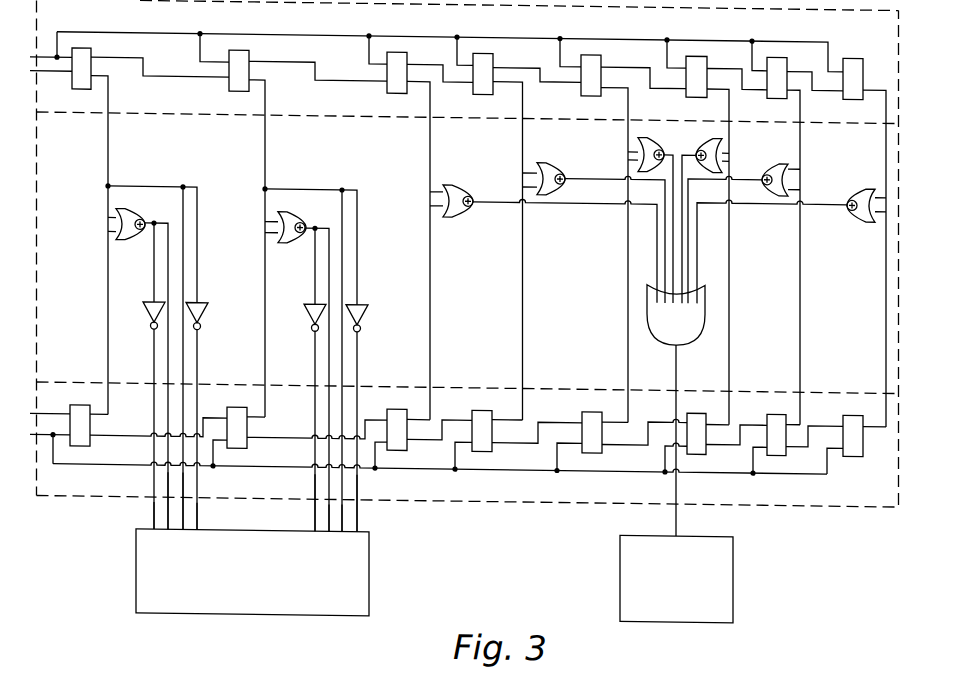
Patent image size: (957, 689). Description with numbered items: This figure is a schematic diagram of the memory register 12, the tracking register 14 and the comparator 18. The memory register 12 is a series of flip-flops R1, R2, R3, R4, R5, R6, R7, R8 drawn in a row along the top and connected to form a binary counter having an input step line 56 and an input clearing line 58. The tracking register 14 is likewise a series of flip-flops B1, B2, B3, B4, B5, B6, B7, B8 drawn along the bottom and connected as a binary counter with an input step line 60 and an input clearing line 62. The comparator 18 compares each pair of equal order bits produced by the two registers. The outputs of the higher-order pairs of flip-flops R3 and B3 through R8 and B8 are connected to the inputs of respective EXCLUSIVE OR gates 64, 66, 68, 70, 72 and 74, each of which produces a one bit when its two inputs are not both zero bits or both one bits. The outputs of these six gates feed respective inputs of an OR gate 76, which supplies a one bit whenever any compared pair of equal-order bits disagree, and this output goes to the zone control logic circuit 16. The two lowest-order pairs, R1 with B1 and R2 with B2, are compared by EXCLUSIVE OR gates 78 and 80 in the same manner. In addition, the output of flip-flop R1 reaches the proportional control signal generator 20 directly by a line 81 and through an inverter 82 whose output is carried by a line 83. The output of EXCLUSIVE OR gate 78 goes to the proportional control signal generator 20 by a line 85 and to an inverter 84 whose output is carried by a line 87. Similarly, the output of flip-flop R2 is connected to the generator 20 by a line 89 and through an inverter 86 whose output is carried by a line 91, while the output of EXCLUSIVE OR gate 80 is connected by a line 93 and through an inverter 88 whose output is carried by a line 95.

The memory register 12 is at (686, 9).
The tracking register 14 is at (873, 478).
The zone control logic circuit 16 is at (733, 577).
The comparator 18 is at (300, 127).
The proportional control signal generator 20 is at (369, 557).
The input step line 56 is at (60, 71).
The input clearing line 58 is at (45, 56).
The input step line 60 is at (50, 387).
The input clearing line 62 is at (53, 437).
The EXCLUSIVE OR gate 64 is at (462, 211).
The EXCLUSIVE OR gate 66 is at (552, 156).
The EXCLUSIVE OR gate 68 is at (652, 131).
The EXCLUSIVE OR gate 70 is at (714, 136).
The EXCLUSIVE OR gate 72 is at (788, 166).
The EXCLUSIVE OR gate 74 is at (858, 210).
The OR gate 76 is at (689, 330).
The EXCLUSIVE OR gate 78 is at (116, 220).
The EXCLUSIVE OR gate 80 is at (278, 222).
The line 81 is at (200, 506).
The inverter 82 is at (208, 302).
The line 83 is at (186, 477).
The inverter 84 is at (147, 300).
The line 85 is at (165, 478).
The inverter 86 is at (368, 300).
The line 87 is at (152, 508).
The inverter 88 is at (312, 303).
The line 89 is at (345, 508).
The line 91 is at (360, 480).
The line 93 is at (313, 481).
The line 95 is at (326, 510).
The memory register flip-flop R1 is at (87, 56).
The memory register flip-flop R2 is at (240, 74).
The memory register flip-flop R3 is at (397, 77).
The memory register flip-flop R4 is at (483, 78).
The memory register flip-flop R5 is at (591, 74).
The memory register flip-flop R6 is at (697, 61).
The memory register flip-flop R7 is at (777, 78).
The memory register flip-flop R8 is at (853, 76).
The tracking register flip-flop B1 is at (80, 426).
The tracking register flip-flop B2 is at (237, 426).
The tracking register flip-flop B3 is at (398, 418).
The tracking register flip-flop B4 is at (485, 418).
The tracking register flip-flop B5 is at (596, 420).
The tracking register flip-flop B6 is at (697, 439).
The tracking register flip-flop B7 is at (776, 440).
The tracking register flip-flop B8 is at (855, 440).